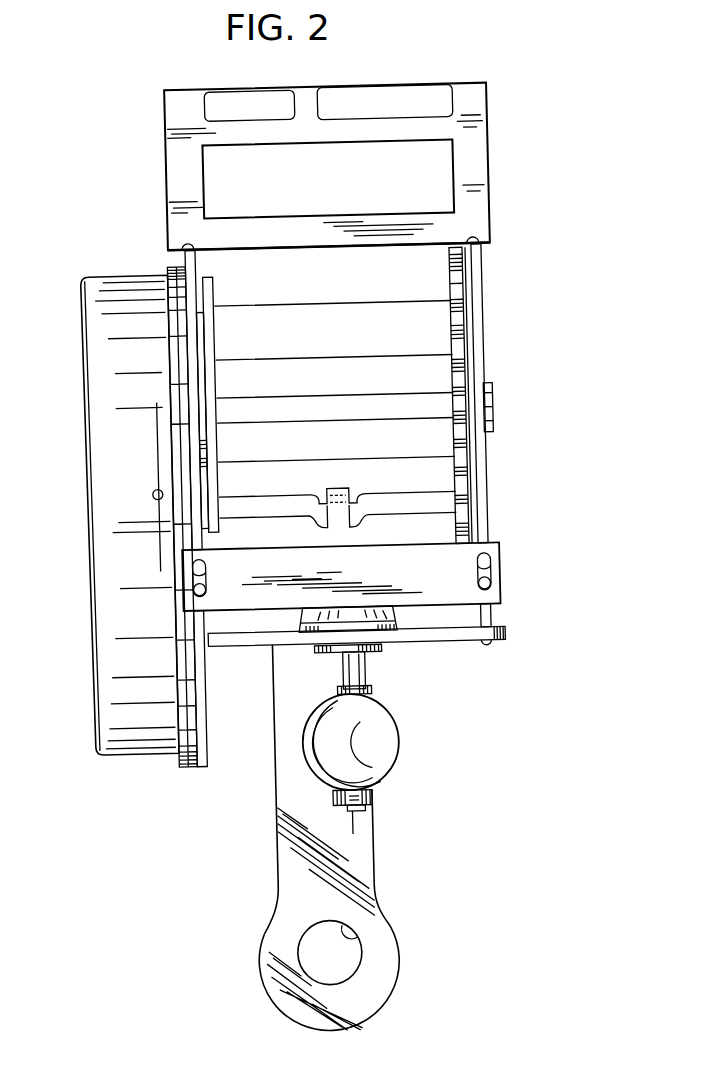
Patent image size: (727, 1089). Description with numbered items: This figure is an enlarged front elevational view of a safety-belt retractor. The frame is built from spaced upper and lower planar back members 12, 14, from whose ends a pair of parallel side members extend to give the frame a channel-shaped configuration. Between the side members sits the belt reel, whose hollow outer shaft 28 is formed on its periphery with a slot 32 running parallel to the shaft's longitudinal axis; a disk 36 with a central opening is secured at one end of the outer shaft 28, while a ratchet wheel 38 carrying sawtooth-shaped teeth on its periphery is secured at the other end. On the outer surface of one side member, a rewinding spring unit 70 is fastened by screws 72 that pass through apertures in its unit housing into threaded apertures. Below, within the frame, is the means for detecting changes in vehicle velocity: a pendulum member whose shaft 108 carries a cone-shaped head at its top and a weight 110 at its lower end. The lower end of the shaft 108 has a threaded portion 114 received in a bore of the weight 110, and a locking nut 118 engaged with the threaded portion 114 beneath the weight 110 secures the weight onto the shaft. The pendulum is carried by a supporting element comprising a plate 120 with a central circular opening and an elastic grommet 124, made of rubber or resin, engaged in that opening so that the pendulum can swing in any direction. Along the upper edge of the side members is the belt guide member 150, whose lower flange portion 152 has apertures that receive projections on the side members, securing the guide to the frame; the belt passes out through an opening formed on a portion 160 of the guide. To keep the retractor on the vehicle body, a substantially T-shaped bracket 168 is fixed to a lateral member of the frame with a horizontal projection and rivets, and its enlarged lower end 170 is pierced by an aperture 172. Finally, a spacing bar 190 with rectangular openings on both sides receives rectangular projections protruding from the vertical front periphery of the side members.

The upper planar back member 12 is at (426, 274).
The lower planar back member 14 is at (440, 507).
The hollow outer shaft 28 is at (383, 366).
The slot 32 is at (414, 407).
The disk 36 is at (218, 369).
The ratchet wheel 38 is at (459, 319).
The rewinding spring unit 70 is at (88, 462).
The screws 72 is at (153, 489).
The shaft 108 is at (338, 680).
The weight 110 is at (351, 738).
The threaded portion 114 is at (346, 809).
The locking nut 118 is at (361, 795).
The plate 120 is at (455, 641).
The grommet 124 is at (359, 622).
The belt guide member 150 is at (488, 153).
The lower flange portion 152 is at (339, 243).
The portion 160 is at (374, 143).
The T-shaped bracket 168 is at (273, 783).
The enlarged lower end 170 is at (384, 956).
The aperture 172 is at (328, 938).
The spacing bar 190 is at (459, 559).